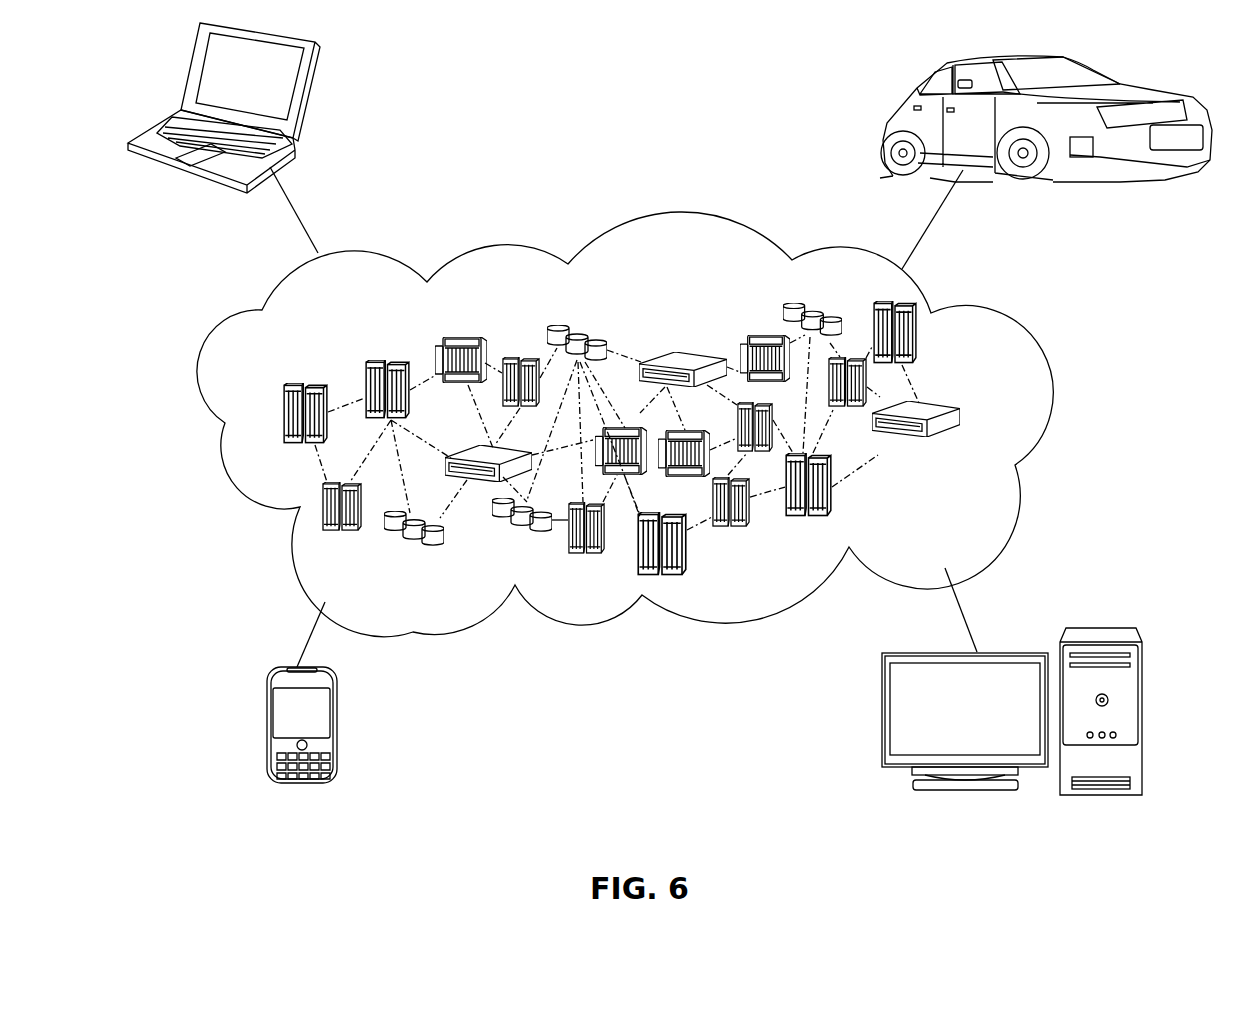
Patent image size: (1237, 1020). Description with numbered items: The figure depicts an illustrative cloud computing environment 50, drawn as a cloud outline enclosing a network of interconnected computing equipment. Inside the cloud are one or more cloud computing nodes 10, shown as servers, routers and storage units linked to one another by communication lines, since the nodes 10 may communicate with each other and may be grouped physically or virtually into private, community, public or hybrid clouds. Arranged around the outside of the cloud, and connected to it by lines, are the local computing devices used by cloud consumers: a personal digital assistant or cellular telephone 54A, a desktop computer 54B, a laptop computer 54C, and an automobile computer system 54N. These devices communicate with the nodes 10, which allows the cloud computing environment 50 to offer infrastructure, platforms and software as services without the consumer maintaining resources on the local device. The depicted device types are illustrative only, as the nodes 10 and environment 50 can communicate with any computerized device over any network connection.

The cloud computing nodes 10 is at (997, 416).
The cloud computing environment 50 is at (1024, 330).
The personal digital assistant or cellular telephone 54A is at (270, 730).
The desktop computer 54B is at (1103, 627).
The laptop computer 54C is at (315, 92).
The automobile computer system 54N is at (893, 102).